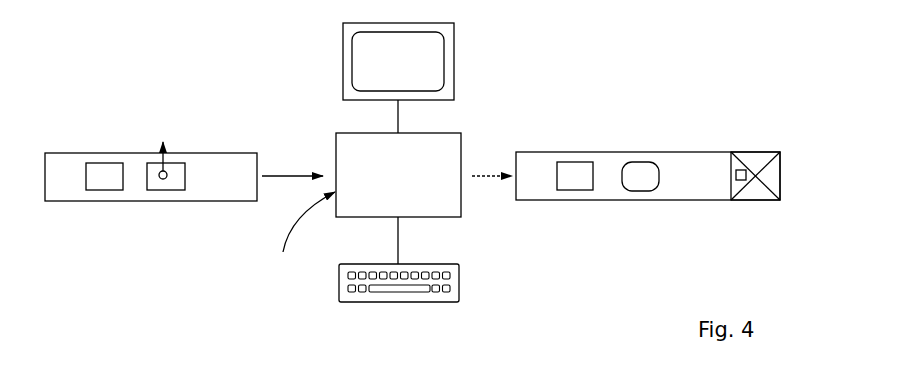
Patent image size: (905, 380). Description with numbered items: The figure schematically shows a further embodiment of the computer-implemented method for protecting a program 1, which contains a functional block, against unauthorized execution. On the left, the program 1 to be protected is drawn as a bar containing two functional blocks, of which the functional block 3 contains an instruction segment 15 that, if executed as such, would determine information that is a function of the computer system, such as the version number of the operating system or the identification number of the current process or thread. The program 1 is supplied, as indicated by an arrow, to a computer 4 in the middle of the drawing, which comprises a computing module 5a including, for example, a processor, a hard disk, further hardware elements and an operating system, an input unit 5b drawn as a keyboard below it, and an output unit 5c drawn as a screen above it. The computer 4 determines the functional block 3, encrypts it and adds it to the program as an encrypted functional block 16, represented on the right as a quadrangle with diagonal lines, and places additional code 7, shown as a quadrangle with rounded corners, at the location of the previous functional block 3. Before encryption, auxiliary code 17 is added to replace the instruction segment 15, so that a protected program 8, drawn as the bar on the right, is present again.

The program 1 is at (233, 201).
The functional block 3 is at (165, 192).
The computer 4 is at (300, 235).
The computing module 5a is at (348, 217).
The input unit 5b is at (358, 303).
The output unit 5c is at (343, 87).
The additional code 7 is at (628, 191).
The protected program 8 is at (690, 201).
The instruction segment 15 is at (165, 160).
The encrypted functional block 16 is at (760, 201).
The auxiliary code 17 is at (748, 170).